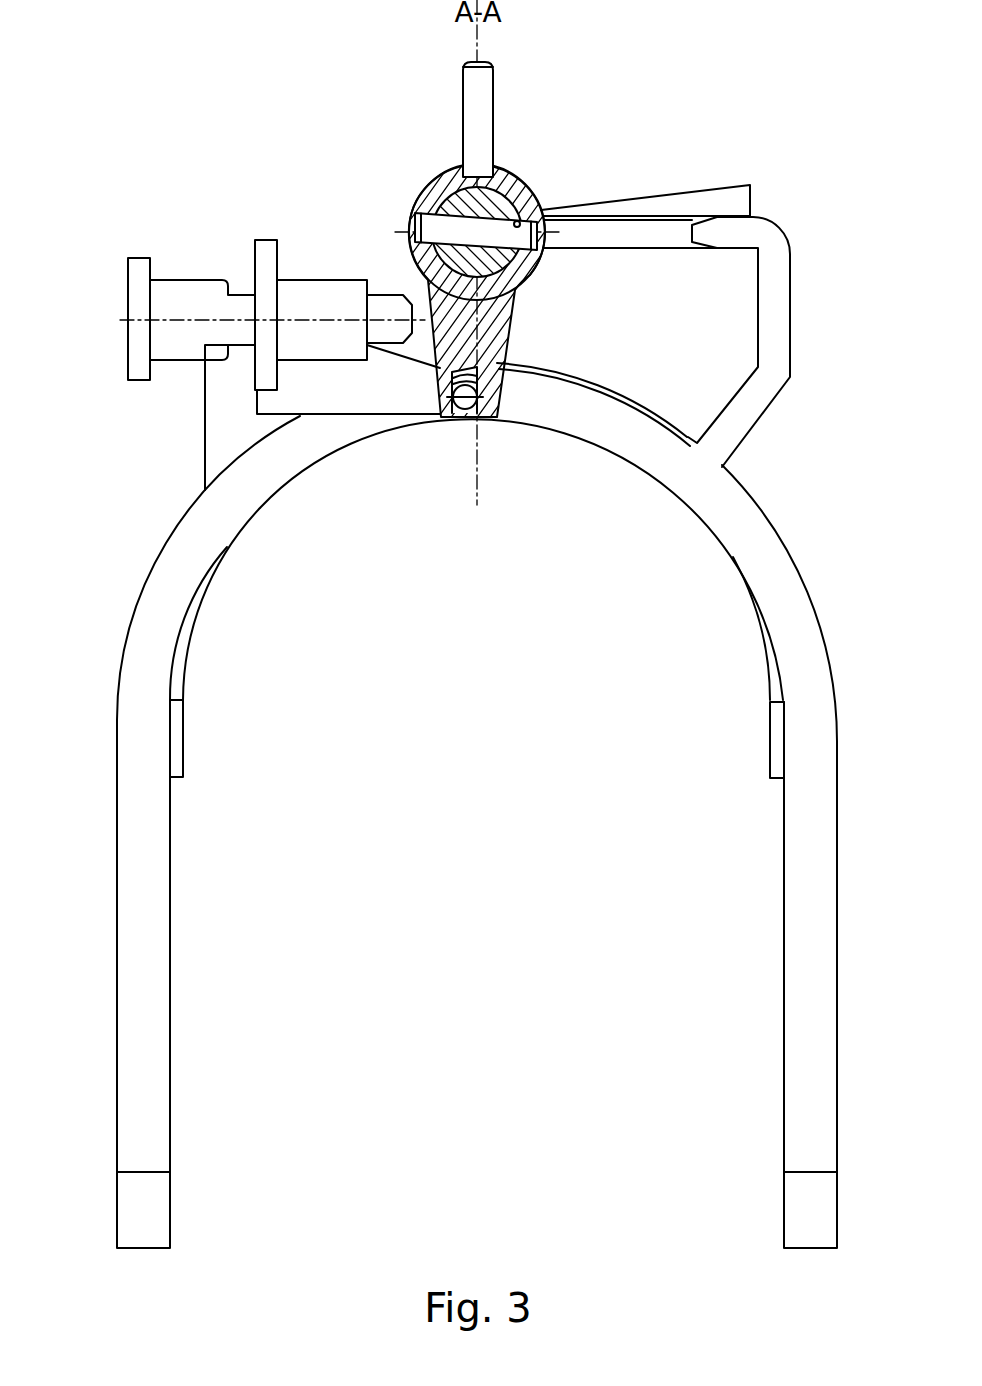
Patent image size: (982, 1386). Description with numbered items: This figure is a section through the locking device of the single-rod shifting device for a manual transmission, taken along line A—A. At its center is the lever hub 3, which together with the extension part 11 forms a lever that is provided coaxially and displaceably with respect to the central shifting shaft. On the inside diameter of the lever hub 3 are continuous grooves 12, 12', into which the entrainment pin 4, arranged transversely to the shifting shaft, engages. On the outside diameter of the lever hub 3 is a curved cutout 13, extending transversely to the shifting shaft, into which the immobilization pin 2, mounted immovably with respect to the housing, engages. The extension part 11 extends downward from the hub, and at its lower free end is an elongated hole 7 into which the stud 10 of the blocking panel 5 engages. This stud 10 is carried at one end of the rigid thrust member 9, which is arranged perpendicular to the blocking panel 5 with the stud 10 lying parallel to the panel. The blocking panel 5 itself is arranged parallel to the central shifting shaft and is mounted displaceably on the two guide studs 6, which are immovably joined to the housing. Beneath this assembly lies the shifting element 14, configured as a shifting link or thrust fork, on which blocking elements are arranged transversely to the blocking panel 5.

The immobilization pin 2 is at (485, 115).
The lever hub 3 is at (517, 180).
The entrainment pin 4 is at (548, 212).
The blocking panel 5 is at (268, 263).
The guide studs 6 is at (390, 303).
The elongated hole 7 is at (478, 375).
The rigid thrust member 9 is at (367, 397).
The stud 10 is at (470, 400).
The extension part 11 is at (493, 300).
The continuous groove 12 is at (645, 179).
The continuous groove 12' is at (431, 192).
The curved cutout 13 is at (458, 165).
The shifting element 14 is at (170, 588).